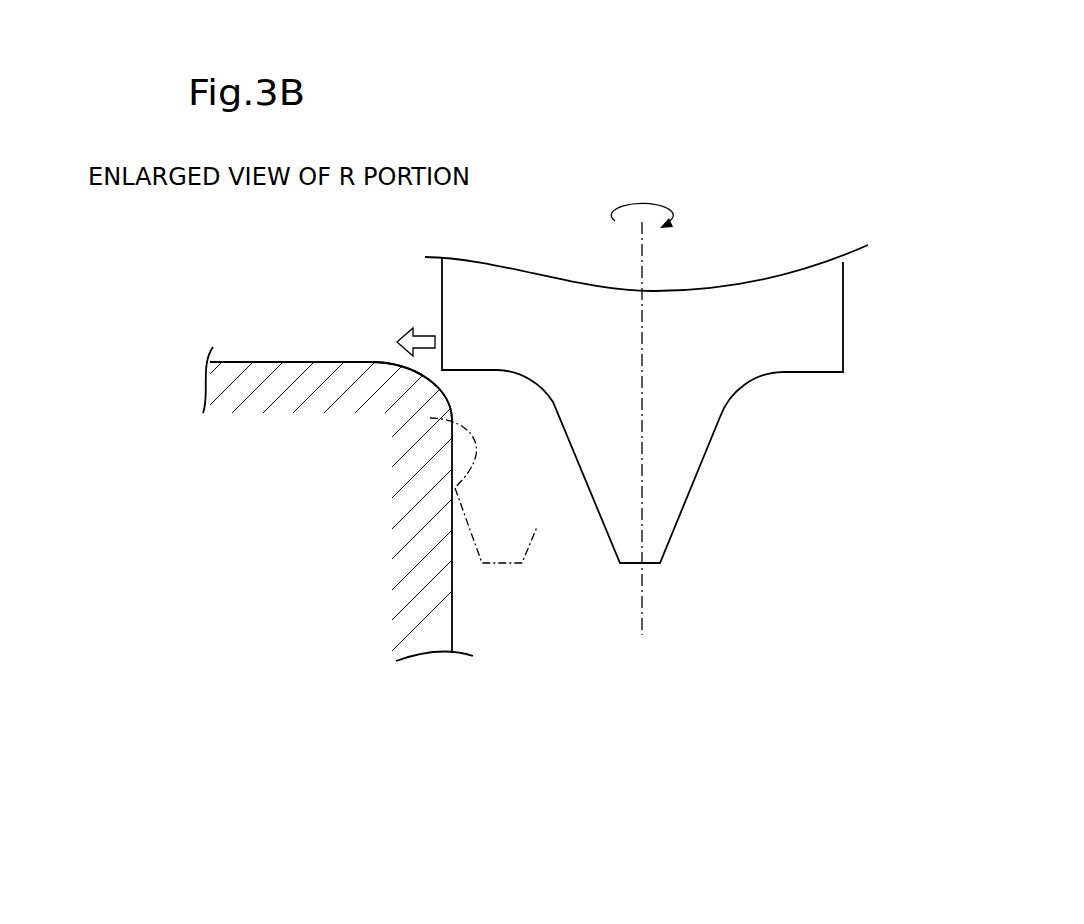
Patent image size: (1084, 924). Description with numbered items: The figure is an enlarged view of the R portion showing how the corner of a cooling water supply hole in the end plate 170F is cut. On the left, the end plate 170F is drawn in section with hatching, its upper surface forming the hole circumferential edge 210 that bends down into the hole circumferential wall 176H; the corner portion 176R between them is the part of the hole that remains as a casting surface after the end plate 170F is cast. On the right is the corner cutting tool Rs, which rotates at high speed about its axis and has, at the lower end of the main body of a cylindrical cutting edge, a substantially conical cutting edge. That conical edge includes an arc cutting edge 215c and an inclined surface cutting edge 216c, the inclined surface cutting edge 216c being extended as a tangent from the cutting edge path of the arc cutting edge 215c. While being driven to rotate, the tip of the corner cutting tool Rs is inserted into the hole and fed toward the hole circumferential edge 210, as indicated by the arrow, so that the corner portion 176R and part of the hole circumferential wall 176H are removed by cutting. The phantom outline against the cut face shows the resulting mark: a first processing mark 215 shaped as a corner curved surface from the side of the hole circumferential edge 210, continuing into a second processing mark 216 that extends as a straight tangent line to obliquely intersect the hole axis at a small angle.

The hole circumferential edge 210 is at (371, 359).
The end plate 170F is at (303, 333).
The corner portion 176R is at (439, 391).
The hole circumferential wall 176H is at (452, 593).
The arc cutting edge 215c is at (548, 398).
The inclined surface cutting edge 216c is at (612, 546).
The first processing mark 215 is at (452, 480).
The second processing mark 216 is at (421, 548).
The corner cutting tool Rs is at (752, 320).